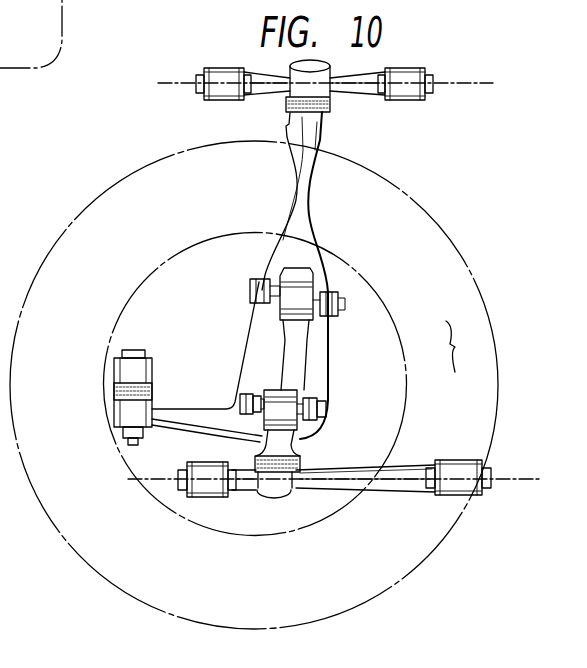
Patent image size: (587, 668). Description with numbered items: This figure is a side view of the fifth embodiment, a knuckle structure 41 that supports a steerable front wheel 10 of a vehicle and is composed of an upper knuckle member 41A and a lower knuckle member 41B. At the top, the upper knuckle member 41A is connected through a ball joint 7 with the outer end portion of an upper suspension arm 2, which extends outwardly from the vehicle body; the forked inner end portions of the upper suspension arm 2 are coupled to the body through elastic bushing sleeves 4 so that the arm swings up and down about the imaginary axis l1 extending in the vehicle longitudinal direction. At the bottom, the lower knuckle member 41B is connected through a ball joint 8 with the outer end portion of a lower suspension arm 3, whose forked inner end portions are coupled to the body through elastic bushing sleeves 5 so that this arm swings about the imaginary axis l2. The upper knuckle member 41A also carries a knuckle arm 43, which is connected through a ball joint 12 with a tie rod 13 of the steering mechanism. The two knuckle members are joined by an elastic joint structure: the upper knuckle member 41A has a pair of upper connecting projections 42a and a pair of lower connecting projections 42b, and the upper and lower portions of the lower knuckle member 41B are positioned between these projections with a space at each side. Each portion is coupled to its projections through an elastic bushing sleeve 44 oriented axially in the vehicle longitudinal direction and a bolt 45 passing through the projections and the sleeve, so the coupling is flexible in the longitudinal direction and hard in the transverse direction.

The upper suspension arm 2 is at (363, 90).
The lower suspension arm 3 is at (369, 492).
The elastic bushing sleeve 4 is at (205, 98).
The elastic bushing sleeve 5 is at (187, 490).
The ball joint 7 is at (334, 104).
The ball joint 8 is at (300, 461).
The steerable front wheel 10 is at (494, 313).
The ball joint 12 is at (114, 393).
The tie rod 13 is at (141, 374).
The knuckle structure 41 is at (463, 346).
The upper knuckle member 41A is at (314, 333).
The lower knuckle member 41B is at (294, 353).
The upper connecting projections 42a is at (258, 280).
The lower connecting projections 42b is at (253, 394).
The knuckle arm 43 is at (200, 412).
The elastic bushing sleeve 44 is at (312, 284).
The bolt 45 is at (346, 305).
The imaginary axis l1 is at (471, 81).
The imaginary axis l2 is at (510, 474).